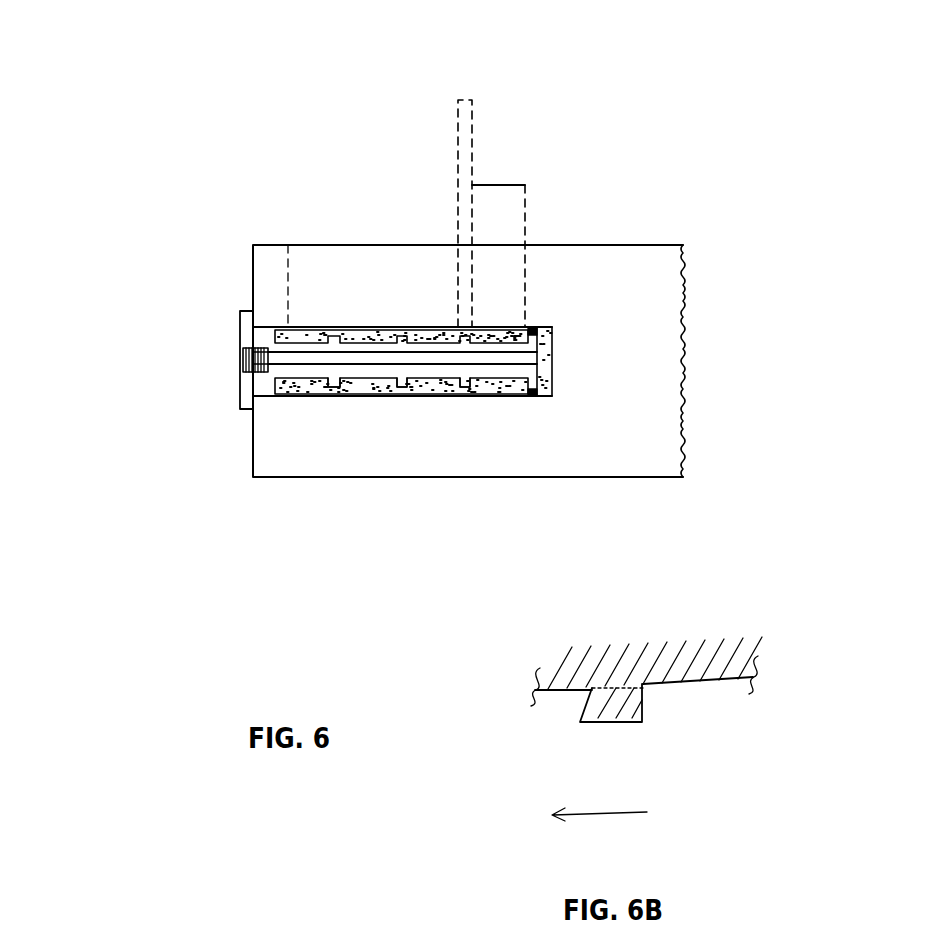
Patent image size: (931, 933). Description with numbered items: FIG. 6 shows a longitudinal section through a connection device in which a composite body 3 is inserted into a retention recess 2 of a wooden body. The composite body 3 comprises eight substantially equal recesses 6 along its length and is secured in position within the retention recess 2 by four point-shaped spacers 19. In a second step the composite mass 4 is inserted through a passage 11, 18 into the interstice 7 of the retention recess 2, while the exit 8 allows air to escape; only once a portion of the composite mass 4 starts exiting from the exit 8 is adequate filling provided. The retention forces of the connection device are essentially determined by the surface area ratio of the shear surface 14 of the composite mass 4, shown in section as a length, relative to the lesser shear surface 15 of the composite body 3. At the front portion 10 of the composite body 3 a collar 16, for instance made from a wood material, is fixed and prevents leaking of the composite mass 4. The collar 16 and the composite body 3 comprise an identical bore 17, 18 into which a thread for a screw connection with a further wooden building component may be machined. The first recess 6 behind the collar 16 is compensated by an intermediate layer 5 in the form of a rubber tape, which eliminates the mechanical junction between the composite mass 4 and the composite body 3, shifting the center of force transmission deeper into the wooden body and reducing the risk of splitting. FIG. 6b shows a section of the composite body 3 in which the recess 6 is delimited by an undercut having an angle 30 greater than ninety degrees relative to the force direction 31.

In FIG. 6, the retention recess 2 is at (497, 400).
In FIG. 6, the composite body 3 is at (431, 350).
In FIG. 6B, the composite body 3 is at (702, 667).
In FIG. 6, the composite mass 4 is at (445, 394).
In FIG. 6, the intermediate layer 5 is at (305, 394).
In FIG. 6, the recess 6 is at (437, 404).
In FIG. 6B, the recess 6 is at (561, 716).
In FIG. 6, the interstice 7 is at (376, 327).
In FIG. 6, the exit 8 is at (288, 245).
In FIG. 6, the front portion 10 is at (221, 396).
In FIG. 6, the passage 11 is at (240, 355).
In FIG. 6, the shear surface 14 is at (495, 185).
In FIG. 6, the shear surface 15 is at (462, 100).
In FIG. 6, the collar 16 is at (240, 312).
In FIG. 6, the bore 17 is at (240, 362).
In FIG. 6, the bore 18 is at (518, 360).
In FIG. 6, the point-shaped spacer 19 is at (537, 394).
In FIG. 6B, the angle 30 is at (603, 690).
In FIG. 6B, the force direction 31 is at (612, 813).